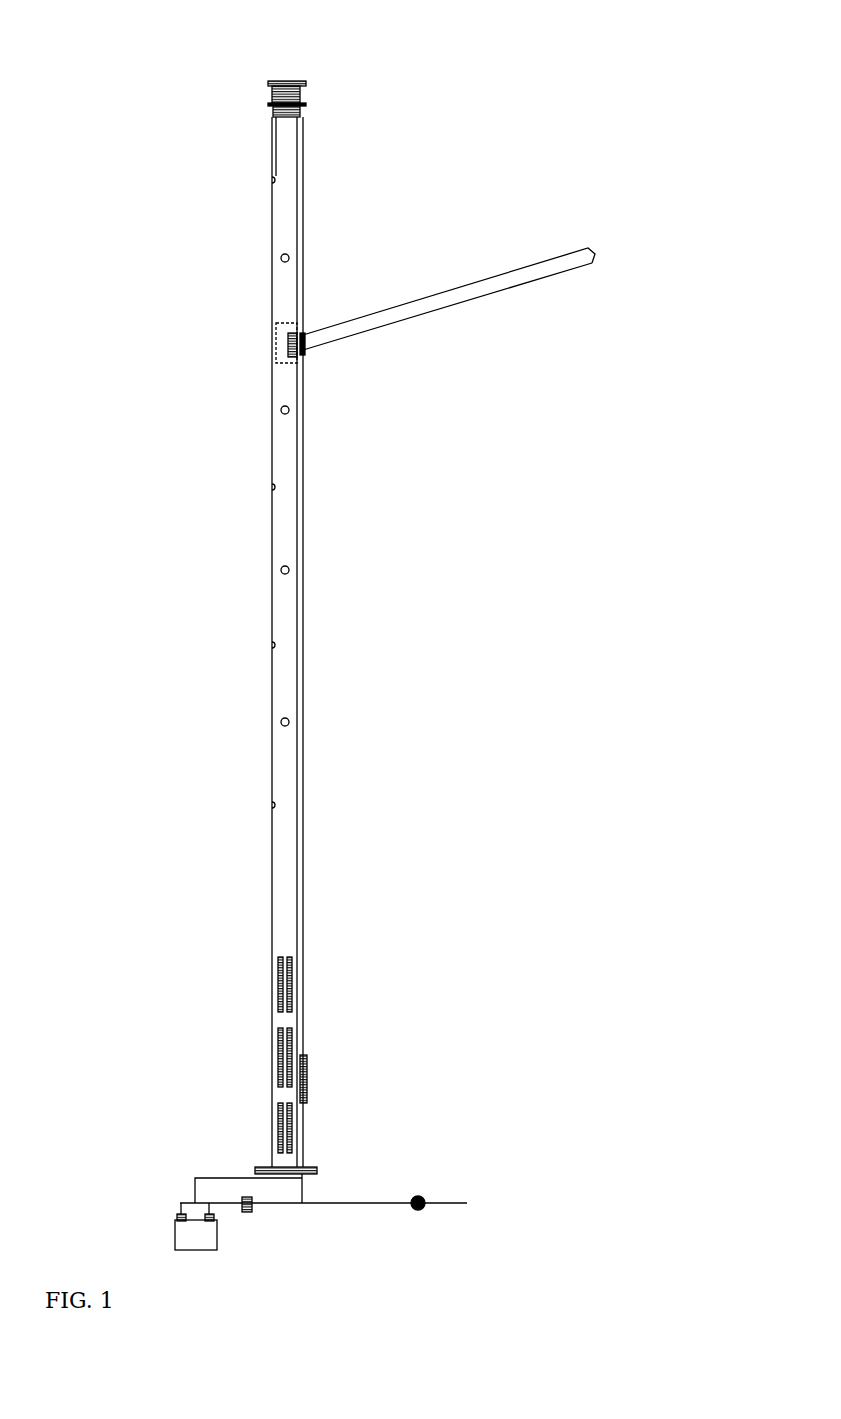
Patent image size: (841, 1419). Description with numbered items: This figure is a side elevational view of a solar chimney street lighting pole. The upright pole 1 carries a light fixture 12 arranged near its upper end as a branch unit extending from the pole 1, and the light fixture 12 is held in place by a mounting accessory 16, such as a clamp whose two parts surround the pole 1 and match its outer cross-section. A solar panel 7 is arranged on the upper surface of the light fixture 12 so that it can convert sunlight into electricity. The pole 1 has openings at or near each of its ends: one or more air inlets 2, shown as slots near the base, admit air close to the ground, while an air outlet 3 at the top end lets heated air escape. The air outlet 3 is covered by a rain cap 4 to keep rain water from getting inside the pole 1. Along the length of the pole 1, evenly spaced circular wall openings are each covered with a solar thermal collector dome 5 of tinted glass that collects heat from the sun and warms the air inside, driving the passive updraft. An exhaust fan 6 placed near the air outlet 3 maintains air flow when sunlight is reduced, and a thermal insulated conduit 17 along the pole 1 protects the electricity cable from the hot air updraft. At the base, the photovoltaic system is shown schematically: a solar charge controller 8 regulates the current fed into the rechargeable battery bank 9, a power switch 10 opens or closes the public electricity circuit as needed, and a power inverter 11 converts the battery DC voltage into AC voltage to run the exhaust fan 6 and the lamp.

The pole 1 is at (270, 908).
The air inlets 2 is at (262, 1053).
The air outlet 3 is at (272, 103).
The rain cap 4 is at (272, 80).
The solar thermal collector dome 5 is at (278, 413).
The exhaust fan 6 is at (272, 113).
The solar panel 7 is at (474, 284).
The solar charge controller 8 is at (255, 1207).
The rechargeable battery bank 9 is at (175, 1230).
The power switch 10 is at (432, 1195).
The power inverter 11 is at (195, 1190).
The light fixture 12 is at (502, 296).
The mounting accessory 16 is at (305, 355).
The thermal insulated conduit 17 is at (303, 795).